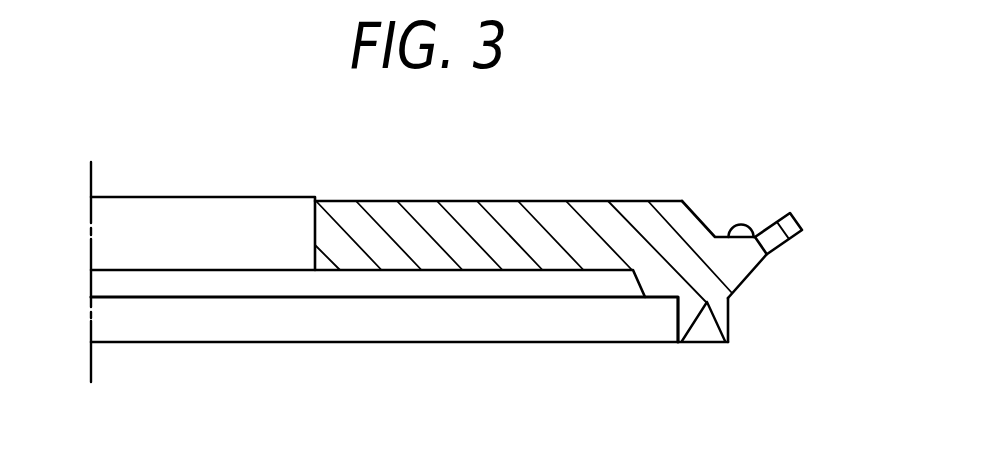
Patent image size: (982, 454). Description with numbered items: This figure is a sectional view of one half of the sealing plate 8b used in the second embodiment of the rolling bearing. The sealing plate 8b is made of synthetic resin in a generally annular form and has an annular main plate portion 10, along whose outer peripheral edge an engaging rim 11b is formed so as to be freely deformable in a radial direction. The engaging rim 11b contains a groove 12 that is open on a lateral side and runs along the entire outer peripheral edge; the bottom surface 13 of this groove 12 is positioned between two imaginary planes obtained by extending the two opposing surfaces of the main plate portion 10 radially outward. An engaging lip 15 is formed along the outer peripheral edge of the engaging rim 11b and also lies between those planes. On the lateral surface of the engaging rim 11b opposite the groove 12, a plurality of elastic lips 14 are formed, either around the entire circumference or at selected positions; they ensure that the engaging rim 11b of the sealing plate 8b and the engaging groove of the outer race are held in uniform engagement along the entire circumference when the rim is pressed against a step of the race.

The main plate portion 10 is at (402, 207).
The sealing plate 8b is at (467, 207).
The groove 12 is at (711, 229).
The engaging lip 15 is at (789, 214).
The bottom surface 13 is at (764, 251).
The engaging rim 11b is at (700, 277).
The elastic lips 14 is at (722, 322).